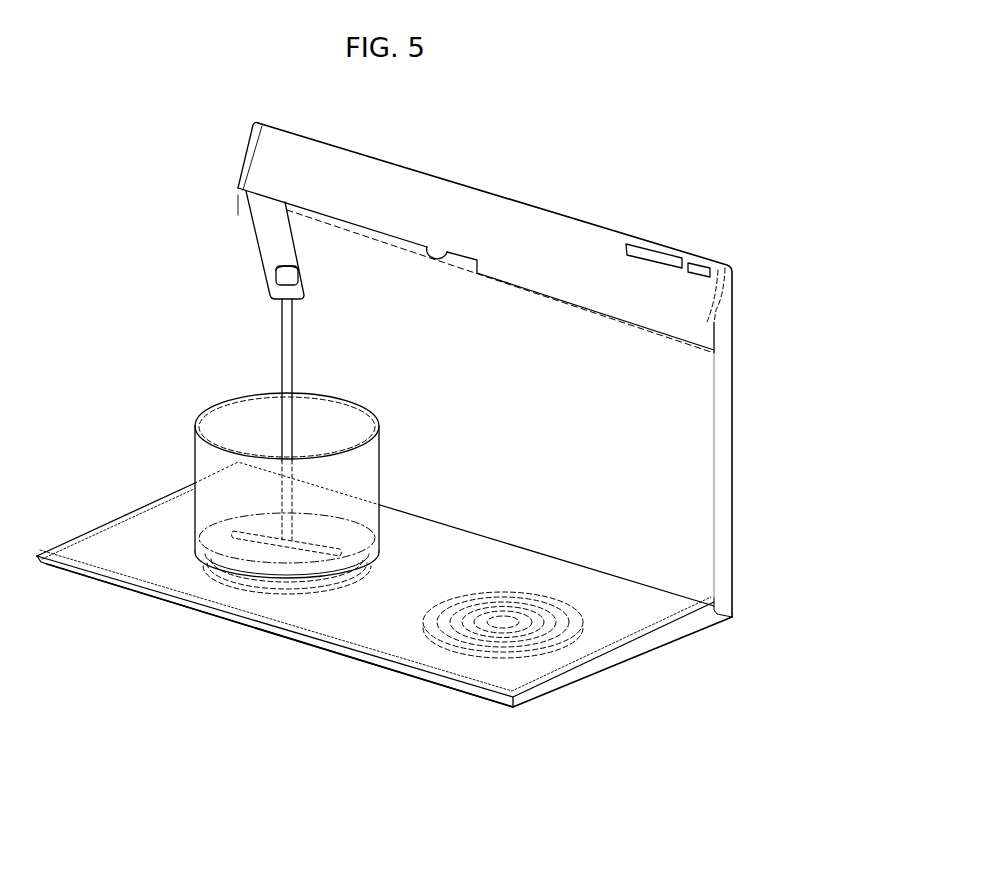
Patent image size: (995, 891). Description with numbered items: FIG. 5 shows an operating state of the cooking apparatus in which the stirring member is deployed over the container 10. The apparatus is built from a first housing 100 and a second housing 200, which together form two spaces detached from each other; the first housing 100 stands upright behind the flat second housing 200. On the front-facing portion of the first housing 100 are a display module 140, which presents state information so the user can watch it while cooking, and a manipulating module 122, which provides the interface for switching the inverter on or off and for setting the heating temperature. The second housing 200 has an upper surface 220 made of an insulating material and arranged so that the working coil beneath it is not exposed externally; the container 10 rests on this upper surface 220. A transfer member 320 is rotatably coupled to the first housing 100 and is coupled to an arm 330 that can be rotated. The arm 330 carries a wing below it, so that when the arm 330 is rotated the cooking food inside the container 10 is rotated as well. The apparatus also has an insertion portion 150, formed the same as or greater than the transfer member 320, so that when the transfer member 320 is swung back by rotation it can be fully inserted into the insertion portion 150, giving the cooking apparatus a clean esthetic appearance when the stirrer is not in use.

The container 10 is at (210, 500).
The first housing 100 is at (252, 365).
The manipulating module 122 is at (700, 268).
The display module 140 is at (653, 256).
The insertion portion 150 is at (429, 251).
The second housing 200 is at (565, 678).
The upper surface 220 is at (268, 603).
The transfer member 320 is at (287, 255).
The arm 330 is at (287, 318).